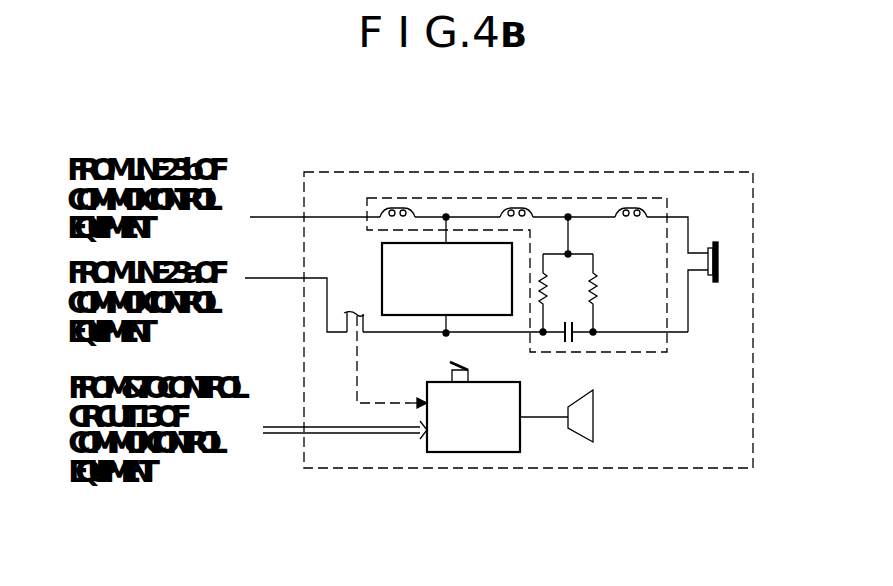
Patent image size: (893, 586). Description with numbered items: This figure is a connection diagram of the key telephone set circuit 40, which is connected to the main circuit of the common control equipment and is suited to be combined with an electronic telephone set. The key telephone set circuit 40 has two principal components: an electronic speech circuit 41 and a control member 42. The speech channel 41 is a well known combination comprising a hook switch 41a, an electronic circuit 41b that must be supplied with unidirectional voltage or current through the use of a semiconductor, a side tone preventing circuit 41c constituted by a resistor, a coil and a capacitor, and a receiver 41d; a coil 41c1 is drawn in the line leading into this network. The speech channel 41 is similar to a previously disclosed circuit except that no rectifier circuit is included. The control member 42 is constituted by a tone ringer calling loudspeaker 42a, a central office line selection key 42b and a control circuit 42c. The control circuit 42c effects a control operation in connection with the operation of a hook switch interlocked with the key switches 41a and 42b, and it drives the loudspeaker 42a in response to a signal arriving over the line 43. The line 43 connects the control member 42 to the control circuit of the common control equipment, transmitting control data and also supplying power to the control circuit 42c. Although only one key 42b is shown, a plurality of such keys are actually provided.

The key telephone set circuit 40 is at (531, 274).
The electronic speech circuit 41 is at (332, 339).
The hook switch 41a is at (349, 312).
The electronic circuit 41b is at (382, 257).
The side tone preventing circuit 41c is at (631, 208).
The coil 41c1 is at (395, 208).
The receiver 41d is at (718, 260).
The control member 42 is at (407, 390).
The tone ringer calling loudspeaker 42a is at (594, 417).
The central office line selection key 42b is at (463, 368).
The control circuit 42c is at (521, 444).
The line 43 is at (285, 427).